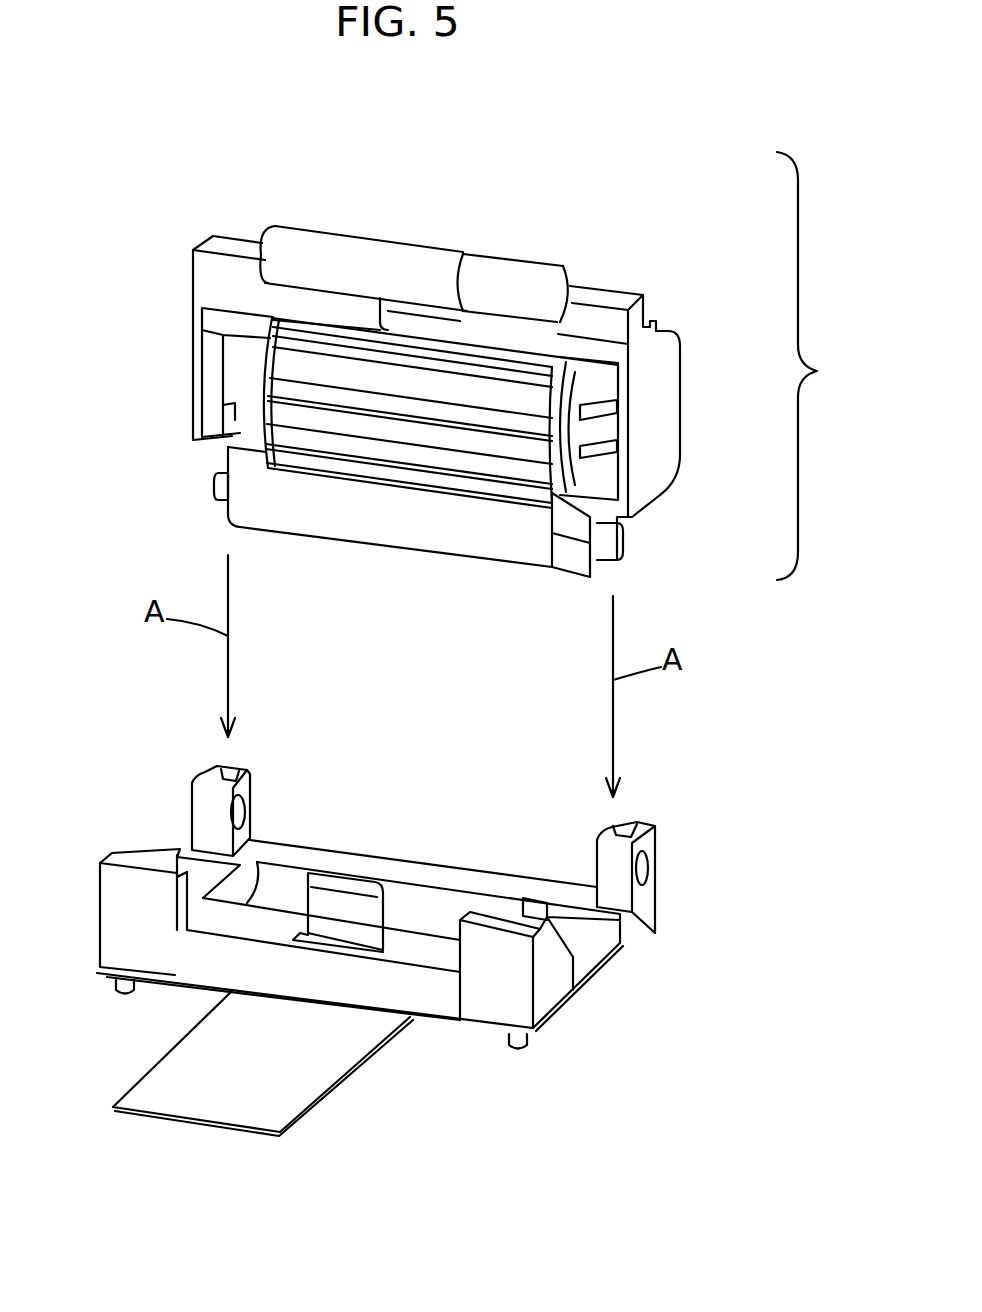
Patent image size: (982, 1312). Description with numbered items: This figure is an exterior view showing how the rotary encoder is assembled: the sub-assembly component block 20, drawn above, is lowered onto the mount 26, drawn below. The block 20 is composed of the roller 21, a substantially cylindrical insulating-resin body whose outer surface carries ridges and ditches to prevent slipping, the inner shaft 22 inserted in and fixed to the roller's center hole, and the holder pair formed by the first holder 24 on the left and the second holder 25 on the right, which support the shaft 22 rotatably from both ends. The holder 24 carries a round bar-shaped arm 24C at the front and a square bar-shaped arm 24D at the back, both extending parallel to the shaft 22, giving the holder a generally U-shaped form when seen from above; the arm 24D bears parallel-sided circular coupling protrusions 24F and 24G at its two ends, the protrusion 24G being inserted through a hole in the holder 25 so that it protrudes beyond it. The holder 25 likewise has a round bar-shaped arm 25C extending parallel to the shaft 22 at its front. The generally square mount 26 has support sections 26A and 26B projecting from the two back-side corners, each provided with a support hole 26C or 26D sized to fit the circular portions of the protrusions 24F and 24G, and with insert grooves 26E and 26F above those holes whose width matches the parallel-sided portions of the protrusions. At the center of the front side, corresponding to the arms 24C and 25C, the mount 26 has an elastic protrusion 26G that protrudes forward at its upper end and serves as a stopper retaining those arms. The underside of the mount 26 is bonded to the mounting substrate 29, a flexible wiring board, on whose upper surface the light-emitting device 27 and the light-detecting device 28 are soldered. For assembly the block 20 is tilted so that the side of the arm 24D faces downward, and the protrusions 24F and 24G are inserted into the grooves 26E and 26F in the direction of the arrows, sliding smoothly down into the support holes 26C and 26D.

The sub-assembly component block 20 is at (819, 366).
The roller 21 is at (417, 378).
The inner shaft 22 is at (594, 430).
The first holder 24 is at (212, 360).
The arm 24C is at (333, 252).
The arm 24D is at (407, 527).
The coupling protrusion 24F is at (218, 490).
The coupling protrusion 24G is at (622, 543).
The second holder 25 is at (663, 374).
The arm 25C is at (514, 272).
The mount 26 is at (353, 985).
The support section 26A is at (203, 815).
The support section 26B is at (652, 838).
The support hole 26C is at (240, 814).
The support hole 26D is at (650, 868).
The insert groove 26E is at (232, 780).
The insert groove 26F is at (612, 832).
The elastic protrusion 26G is at (345, 880).
The light-emitting device 27 is at (196, 884).
The light-detecting device 28 is at (573, 945).
The mounting substrate 29 is at (270, 1073).